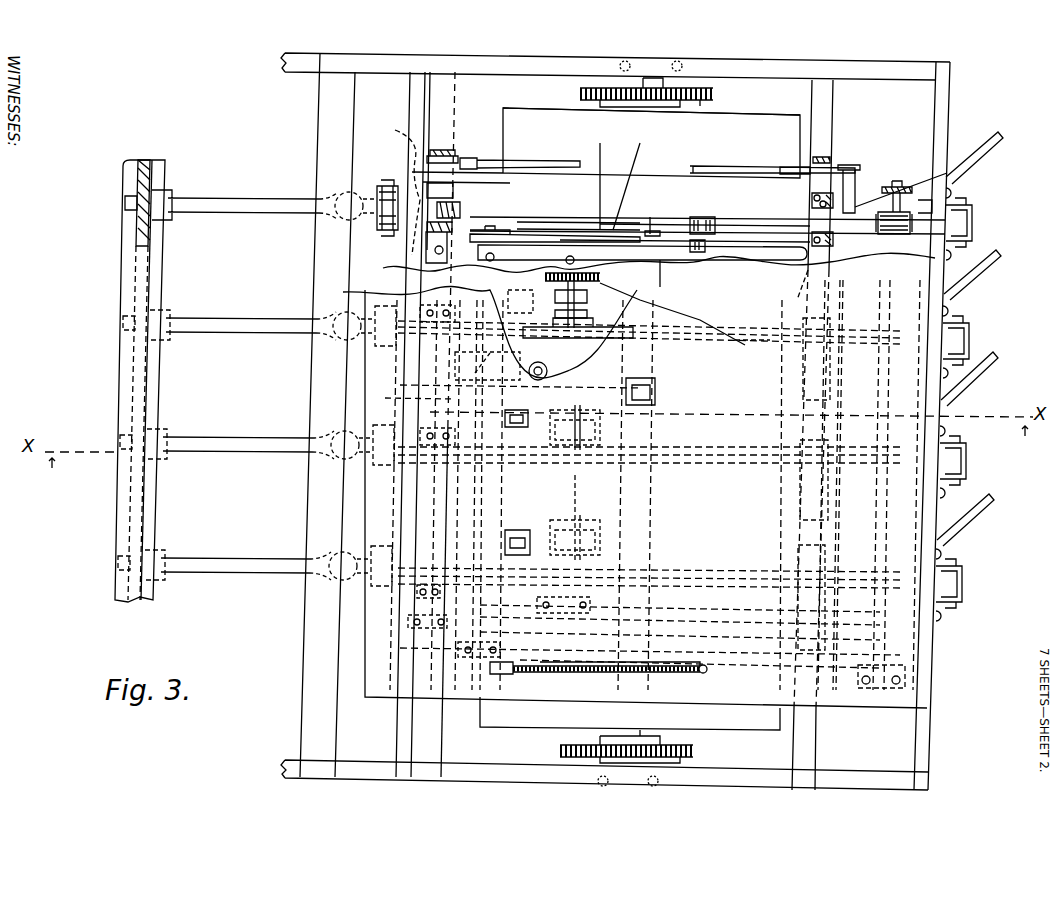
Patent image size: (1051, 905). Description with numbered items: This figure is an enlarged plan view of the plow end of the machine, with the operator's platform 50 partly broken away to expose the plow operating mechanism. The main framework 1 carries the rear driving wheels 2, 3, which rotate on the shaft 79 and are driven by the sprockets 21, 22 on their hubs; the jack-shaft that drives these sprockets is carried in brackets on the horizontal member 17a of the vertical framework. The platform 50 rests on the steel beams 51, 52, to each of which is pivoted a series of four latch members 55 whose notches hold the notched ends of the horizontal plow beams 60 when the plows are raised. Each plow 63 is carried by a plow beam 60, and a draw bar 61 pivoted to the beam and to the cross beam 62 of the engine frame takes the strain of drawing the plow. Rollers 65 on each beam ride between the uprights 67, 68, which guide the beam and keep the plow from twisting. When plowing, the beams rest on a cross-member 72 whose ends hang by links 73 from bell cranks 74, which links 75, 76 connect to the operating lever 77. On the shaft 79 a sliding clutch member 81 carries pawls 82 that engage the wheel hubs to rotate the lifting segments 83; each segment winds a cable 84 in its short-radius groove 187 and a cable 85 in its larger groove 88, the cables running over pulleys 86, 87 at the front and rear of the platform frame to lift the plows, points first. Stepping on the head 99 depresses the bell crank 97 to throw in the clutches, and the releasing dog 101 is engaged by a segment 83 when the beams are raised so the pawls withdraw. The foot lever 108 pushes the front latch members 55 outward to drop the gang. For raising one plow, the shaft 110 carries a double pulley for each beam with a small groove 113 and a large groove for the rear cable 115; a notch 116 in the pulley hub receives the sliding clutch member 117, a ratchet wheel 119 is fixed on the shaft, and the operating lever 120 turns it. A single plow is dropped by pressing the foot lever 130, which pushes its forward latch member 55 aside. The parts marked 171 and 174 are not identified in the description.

The framework 1 is at (455, 787).
The wheel 2 is at (768, 62).
The wheel 3 is at (651, 123).
The horizontal member 17a is at (327, 415).
The sprocket 21 is at (696, 751).
The sprocket 22 is at (716, 94).
The operator's platform 50 is at (646, 408).
The steel beam 51 is at (935, 724).
The steel beam 52 is at (395, 720).
The latch member 55 is at (380, 220).
The horizontal plow beam 60 is at (748, 338).
The draw bar 61 is at (252, 214).
The cross beam 62 is at (156, 391).
The plow 63 is at (988, 150).
The roller 65 is at (806, 202).
The upright 67 is at (820, 250).
The upright 68 is at (866, 186).
The cross-member 72 is at (840, 198).
The link 73 is at (398, 140).
The bell crank 74 is at (455, 150).
The link 75 is at (726, 166).
The link 76 is at (540, 160).
The operating lever 77 is at (555, 678).
The shaft 79 is at (650, 262).
The sliding clutch member 81 is at (700, 262).
The pawl 82 is at (700, 246).
The differential lifting segment 83 is at (662, 217).
The cable 84 is at (525, 236).
The cable 85 is at (716, 217).
The pulley 86 is at (482, 232).
The pulley 87 is at (882, 238).
The segmental groove 88 is at (640, 176).
The bell crank 97 is at (665, 310).
The head 99 is at (550, 372).
The releasing dog 101 is at (385, 399).
The foot lever 108 is at (655, 388).
The shaft 110 is at (572, 498).
The groove 113 is at (590, 430).
The cable 115 is at (770, 348).
The notch 116 is at (585, 332).
The sliding clutch member 117 is at (588, 300).
The ratchet wheel 119 is at (476, 331).
The operating lever 120 is at (643, 263).
The foot lever 130 is at (514, 530).
The plate 171 is at (485, 369).
The plate 174 is at (488, 338).
The segmental groove 187 is at (609, 176).